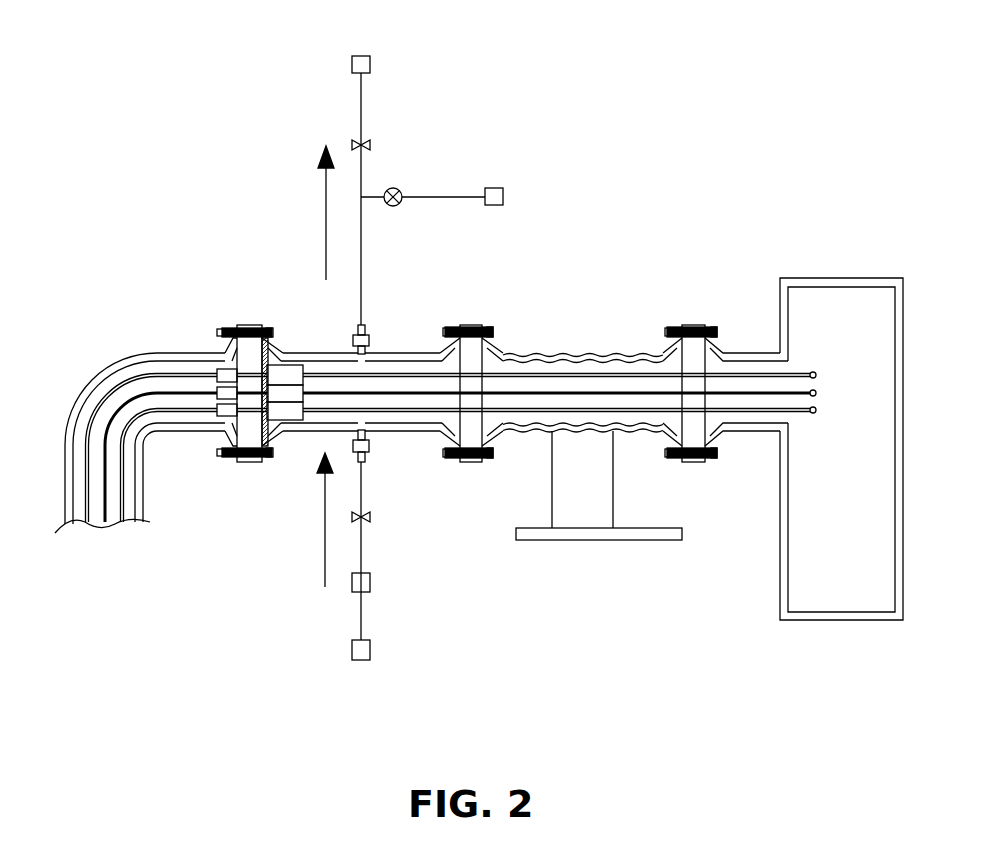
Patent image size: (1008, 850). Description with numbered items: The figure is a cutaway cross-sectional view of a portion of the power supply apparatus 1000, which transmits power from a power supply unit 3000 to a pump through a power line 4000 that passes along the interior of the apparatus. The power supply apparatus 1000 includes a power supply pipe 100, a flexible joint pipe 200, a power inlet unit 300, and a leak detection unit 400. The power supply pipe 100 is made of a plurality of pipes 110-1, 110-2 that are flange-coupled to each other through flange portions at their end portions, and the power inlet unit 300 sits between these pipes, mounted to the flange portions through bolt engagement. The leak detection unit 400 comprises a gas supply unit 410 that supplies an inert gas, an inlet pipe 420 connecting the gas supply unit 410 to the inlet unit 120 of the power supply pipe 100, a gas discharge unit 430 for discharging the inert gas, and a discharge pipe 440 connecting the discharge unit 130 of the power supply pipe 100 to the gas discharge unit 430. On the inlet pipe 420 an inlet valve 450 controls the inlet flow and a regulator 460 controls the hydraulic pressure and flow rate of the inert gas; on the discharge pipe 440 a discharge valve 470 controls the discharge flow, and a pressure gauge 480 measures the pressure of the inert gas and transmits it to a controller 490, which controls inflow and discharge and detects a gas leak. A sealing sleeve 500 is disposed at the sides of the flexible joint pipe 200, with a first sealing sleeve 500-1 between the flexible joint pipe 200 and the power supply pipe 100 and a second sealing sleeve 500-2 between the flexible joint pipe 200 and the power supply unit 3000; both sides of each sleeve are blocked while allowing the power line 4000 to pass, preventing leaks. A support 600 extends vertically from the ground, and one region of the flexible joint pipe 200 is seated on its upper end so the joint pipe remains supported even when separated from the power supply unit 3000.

The power supply pipe 100 is at (162, 332).
The pipe 110-1 is at (192, 350).
The pipe 110-2 is at (297, 364).
The inlet unit 120 is at (369, 447).
The discharge unit 130 is at (369, 341).
The flexible joint pipe 200 is at (647, 432).
The power inlet unit 300 is at (246, 462).
The leak detection unit 400 is at (233, 65).
The gas supply unit 410 is at (370, 656).
The inlet pipe 420 is at (358, 623).
The gas discharge unit 430 is at (352, 60).
The discharge pipe 440 is at (362, 258).
The inlet valve 450 is at (370, 519).
The regulator 460 is at (370, 590).
The discharge valve 470 is at (352, 145).
The pressure gauge 480 is at (399, 189).
The controller 490 is at (498, 188).
The sealing sleeve 500 is at (653, 224).
The first sealing sleeve 500-1 is at (472, 340).
The second sealing sleeve 500-2 is at (692, 347).
The support 600 is at (627, 541).
The power supply apparatus 1000 is at (673, 140).
The power supply unit 3000 is at (840, 622).
The power line 4000 is at (102, 403).